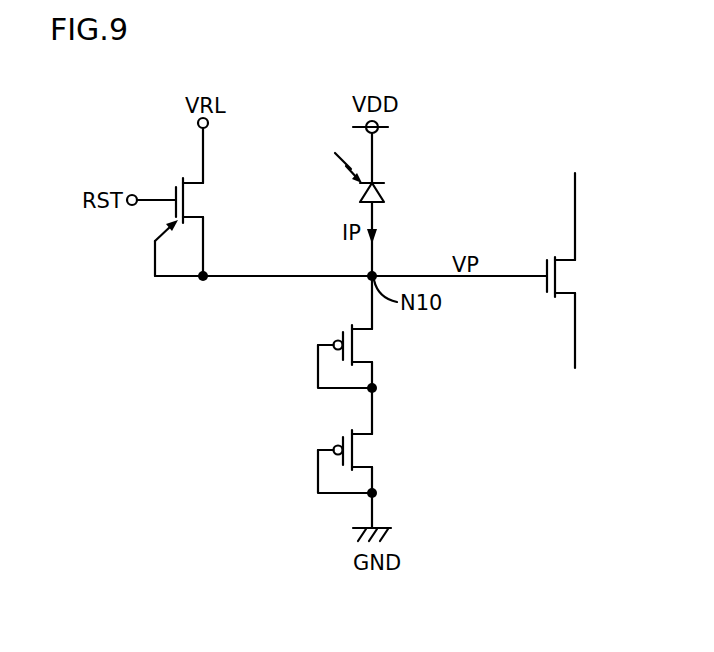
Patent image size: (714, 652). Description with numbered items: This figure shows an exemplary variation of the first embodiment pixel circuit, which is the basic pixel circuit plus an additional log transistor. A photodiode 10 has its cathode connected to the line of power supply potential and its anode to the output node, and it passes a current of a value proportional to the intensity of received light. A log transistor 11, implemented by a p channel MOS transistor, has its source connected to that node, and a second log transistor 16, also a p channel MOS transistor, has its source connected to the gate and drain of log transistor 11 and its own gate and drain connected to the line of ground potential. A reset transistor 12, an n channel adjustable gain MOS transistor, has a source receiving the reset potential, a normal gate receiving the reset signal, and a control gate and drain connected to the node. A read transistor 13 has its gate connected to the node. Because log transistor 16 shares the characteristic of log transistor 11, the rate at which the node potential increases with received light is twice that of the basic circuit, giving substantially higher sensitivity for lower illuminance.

The photodiode 10 is at (382, 194).
The log transistor 11 is at (362, 326).
The reset transistor 12 is at (195, 180).
The read transistor 13 is at (570, 258).
The log transistor 16 is at (362, 431).